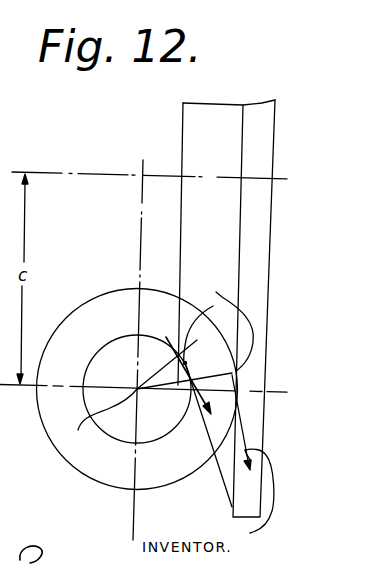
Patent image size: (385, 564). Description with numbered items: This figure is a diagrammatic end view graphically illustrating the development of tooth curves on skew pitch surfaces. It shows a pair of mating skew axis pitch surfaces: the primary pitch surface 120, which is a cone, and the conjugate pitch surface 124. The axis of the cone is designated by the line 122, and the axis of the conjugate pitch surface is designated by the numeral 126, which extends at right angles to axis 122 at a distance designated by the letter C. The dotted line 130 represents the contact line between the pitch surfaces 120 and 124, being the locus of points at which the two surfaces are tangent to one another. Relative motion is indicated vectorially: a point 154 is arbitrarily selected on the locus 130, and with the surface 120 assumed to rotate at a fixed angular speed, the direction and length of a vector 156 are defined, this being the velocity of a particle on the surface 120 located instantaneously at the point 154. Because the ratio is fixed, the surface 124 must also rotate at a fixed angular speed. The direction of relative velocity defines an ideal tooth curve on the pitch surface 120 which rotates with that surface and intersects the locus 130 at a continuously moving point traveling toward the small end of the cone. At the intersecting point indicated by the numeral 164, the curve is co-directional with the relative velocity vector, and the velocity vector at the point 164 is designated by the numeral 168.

The primary pitch surface 120 is at (84, 468).
The axis of the primary pitch surface 122 is at (52, 447).
The conjugate pitch surface 124 is at (227, 463).
The axis of the conjugate pitch surface 126 is at (107, 174).
The contact line 130 is at (230, 373).
The point on the locus 154 is at (184, 283).
The velocity vector 156 is at (207, 536).
The intersecting point 164 is at (180, 300).
The velocity vector at the intersecting point 168 is at (198, 417).